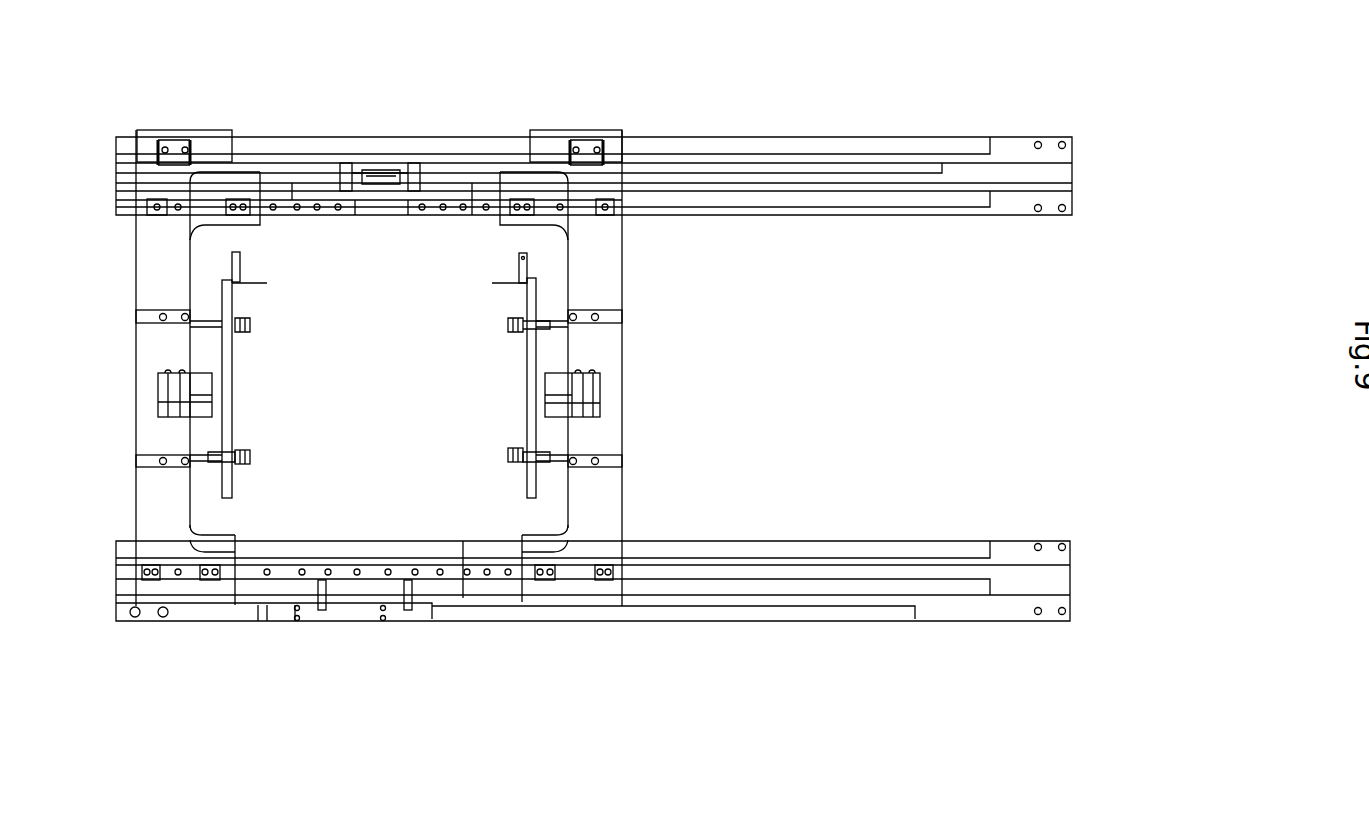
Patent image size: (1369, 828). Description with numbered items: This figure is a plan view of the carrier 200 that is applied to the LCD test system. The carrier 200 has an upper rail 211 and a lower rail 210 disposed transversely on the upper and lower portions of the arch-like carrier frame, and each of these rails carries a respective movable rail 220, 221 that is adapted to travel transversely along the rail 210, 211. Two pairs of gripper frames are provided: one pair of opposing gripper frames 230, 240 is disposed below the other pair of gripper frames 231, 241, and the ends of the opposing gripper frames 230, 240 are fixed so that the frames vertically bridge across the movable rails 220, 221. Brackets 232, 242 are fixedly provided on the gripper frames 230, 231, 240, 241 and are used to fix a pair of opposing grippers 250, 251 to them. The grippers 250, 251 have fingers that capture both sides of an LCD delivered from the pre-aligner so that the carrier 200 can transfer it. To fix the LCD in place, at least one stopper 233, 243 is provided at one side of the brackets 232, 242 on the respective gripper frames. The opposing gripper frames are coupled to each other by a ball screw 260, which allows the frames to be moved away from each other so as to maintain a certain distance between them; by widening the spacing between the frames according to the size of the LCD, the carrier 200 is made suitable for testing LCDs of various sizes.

The carrier 200 is at (366, 648).
The lower rail 210 is at (975, 607).
The upper rail 211 is at (1012, 143).
The movable rail 220 is at (880, 594).
The movable rail 221 is at (920, 200).
The gripper frame 230 is at (523, 172).
The gripper frame 231 is at (612, 487).
The bracket 232 is at (558, 462).
The stopper 233 is at (519, 275).
The gripper frame 240 is at (250, 172).
The gripper frame 241 is at (142, 488).
The bracket 242 is at (190, 318).
The stopper 243 is at (240, 280).
The gripper 250 is at (508, 453).
The gripper 251 is at (250, 455).
The ball screw 260 is at (362, 163).